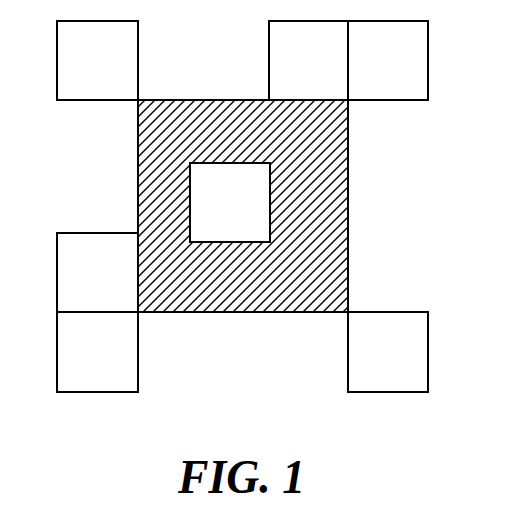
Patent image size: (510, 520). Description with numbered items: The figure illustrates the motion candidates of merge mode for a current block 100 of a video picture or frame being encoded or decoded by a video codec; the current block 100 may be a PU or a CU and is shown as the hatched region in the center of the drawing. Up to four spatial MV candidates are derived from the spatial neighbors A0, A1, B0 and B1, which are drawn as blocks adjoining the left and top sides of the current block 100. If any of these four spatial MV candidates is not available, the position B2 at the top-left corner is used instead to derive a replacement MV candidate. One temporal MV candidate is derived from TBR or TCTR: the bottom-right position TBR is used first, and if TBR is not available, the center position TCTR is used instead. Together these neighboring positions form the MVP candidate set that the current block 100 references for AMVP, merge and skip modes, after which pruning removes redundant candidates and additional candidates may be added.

The current block 100 is at (295, 313).
The element TCTR is at (230, 202).
The element TBR is at (388, 352).
The element B2 is at (97, 60).
The element B1 is at (308, 60).
The element B0 is at (388, 60).
The element A1 is at (97, 272).
The element A0 is at (97, 352).